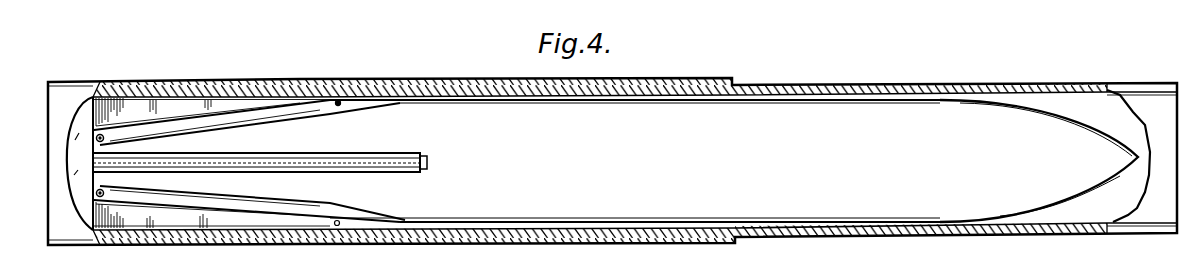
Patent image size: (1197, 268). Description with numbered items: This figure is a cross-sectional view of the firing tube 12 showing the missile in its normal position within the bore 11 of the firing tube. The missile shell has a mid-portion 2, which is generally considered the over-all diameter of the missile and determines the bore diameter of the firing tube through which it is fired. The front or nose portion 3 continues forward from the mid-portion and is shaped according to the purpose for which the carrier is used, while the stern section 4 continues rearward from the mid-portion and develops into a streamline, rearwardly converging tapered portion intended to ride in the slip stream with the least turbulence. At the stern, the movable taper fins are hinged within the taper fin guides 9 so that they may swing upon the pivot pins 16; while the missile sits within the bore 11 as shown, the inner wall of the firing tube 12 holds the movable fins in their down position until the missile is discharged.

The mid-portion 2 is at (698, 154).
The nose portion 3 is at (943, 152).
The stern section 4 is at (486, 160).
The taper fin guides 9 is at (277, 213).
The bore 11 is at (1124, 113).
The firing tube 12 is at (1063, 84).
The pivot pins 16 is at (80, 163).